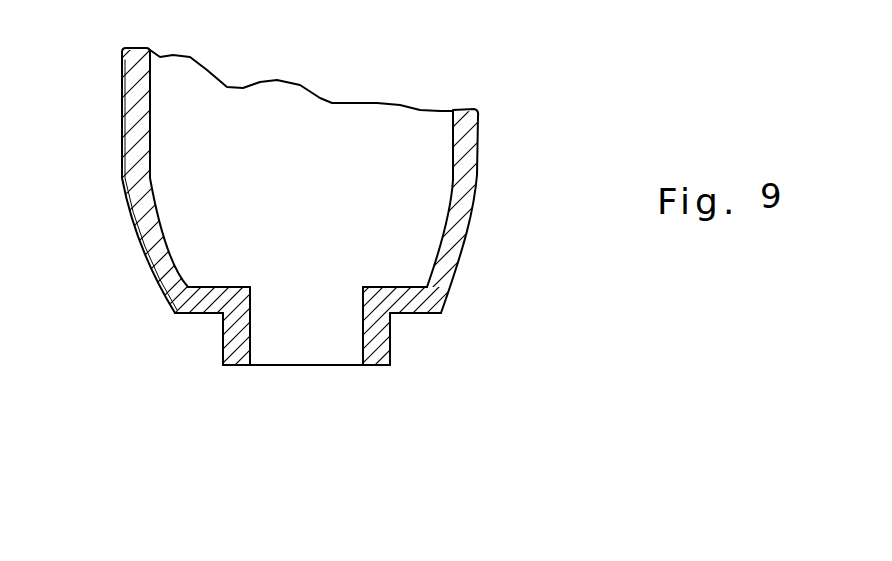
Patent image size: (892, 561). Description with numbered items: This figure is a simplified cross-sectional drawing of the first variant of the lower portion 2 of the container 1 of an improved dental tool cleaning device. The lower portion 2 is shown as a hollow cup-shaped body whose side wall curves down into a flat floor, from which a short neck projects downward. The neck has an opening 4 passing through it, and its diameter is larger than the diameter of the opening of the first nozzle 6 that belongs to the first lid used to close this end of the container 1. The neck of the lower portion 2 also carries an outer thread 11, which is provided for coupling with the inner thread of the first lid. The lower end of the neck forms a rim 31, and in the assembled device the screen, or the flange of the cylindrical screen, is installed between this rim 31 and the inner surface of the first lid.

The container 1 is at (120, 68).
The lower portion 2 is at (503, 148).
The opening 4 is at (310, 308).
The first nozzle 6 is at (391, 337).
The outer thread 11 is at (250, 338).
The rim 31 is at (382, 366).